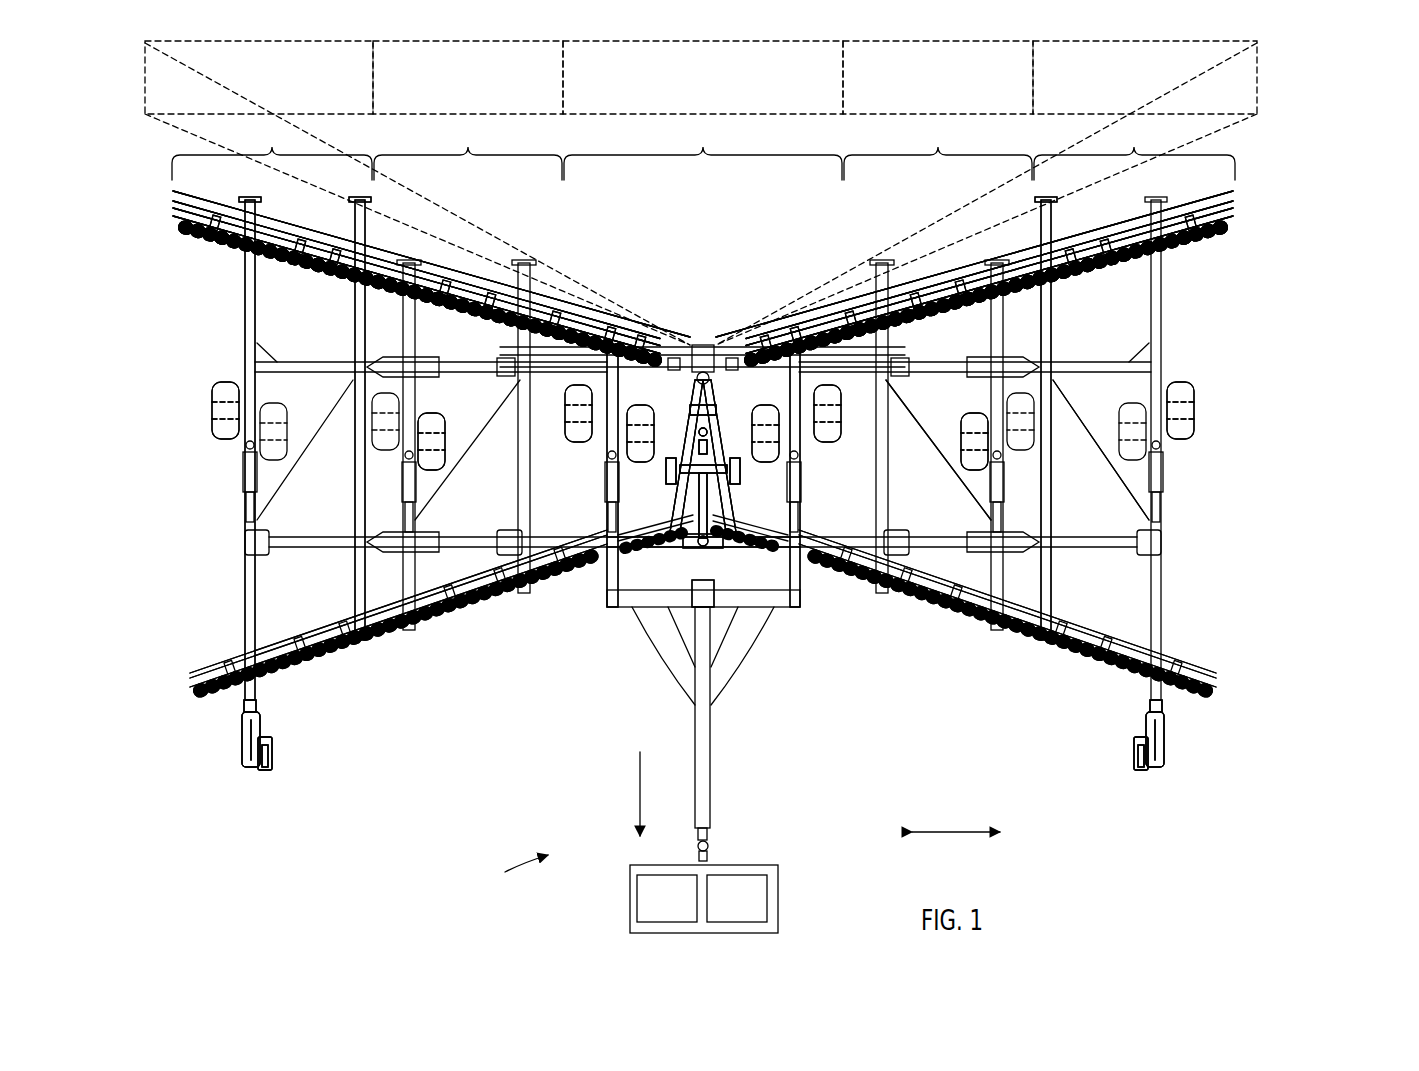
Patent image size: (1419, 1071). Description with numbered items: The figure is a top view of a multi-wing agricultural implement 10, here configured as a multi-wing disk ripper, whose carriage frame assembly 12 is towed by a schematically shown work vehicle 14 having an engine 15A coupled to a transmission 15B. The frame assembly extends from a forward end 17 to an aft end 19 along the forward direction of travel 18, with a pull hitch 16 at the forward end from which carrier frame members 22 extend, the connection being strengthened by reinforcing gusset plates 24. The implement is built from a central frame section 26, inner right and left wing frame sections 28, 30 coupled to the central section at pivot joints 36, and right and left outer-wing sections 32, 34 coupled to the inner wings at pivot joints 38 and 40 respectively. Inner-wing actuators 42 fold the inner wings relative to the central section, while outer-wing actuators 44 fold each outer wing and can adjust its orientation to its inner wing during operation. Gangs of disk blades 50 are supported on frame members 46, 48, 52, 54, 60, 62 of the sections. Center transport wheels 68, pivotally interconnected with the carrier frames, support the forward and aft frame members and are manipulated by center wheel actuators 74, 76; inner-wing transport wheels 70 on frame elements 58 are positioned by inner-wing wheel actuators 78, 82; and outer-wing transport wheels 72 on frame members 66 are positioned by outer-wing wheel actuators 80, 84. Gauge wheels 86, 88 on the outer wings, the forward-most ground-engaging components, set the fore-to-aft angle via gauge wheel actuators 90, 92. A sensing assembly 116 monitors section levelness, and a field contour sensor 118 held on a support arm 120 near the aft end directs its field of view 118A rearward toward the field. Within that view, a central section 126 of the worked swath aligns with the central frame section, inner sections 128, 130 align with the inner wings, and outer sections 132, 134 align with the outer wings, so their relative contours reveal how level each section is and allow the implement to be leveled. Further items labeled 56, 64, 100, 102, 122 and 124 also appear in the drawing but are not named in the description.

The multi-wing agricultural implement 10 is at (1318, 290).
The carriage frame assembly 12 is at (795, 612).
The work vehicle 14 is at (782, 900).
The engine 15A is at (648, 913).
The transmission 15B is at (718, 913).
The pull hitch 16 is at (712, 800).
The forward end 17 is at (511, 865).
The forward direction of travel 18 is at (635, 760).
The aft end 19 is at (580, 135).
The carrier frame members 22 is at (607, 595).
The reinforcing gusset plates 24 is at (672, 675).
The central frame section 26 is at (703, 147).
The inner right wing frame section 28 is at (938, 147).
The inner left wing frame section 30 is at (468, 147).
The right outer-wing section 32 is at (1134, 147).
The left outer-wing section 34 is at (272, 147).
The pivot joints 36 is at (565, 325).
The pivot joints 38 is at (1040, 260).
The pivot joints 40 is at (365, 240).
The inner-wing actuators 42 is at (668, 358).
The outer-wing actuators 44 is at (460, 362).
The forward frame member 46 is at (640, 550).
The aft frame member 48 is at (690, 345).
The gangs of disk blades 50 is at (290, 225).
The frame member 52 is at (478, 612).
The frame member 54 is at (445, 280).
The diagonal brace 56 is at (525, 448).
The frame elements 58 is at (410, 380).
The frame member 60 is at (225, 690).
The frame member 62 is at (208, 198).
The inner leg 64 is at (354, 585).
The frame members 66 is at (244, 590).
The center transport wheels 68 is at (570, 470).
The inner-wing transport wheels 70 is at (440, 480).
The outer-wing transport wheels 72 is at (230, 455).
The center wheel actuator 74 is at (613, 522).
The center wheel actuator 76 is at (795, 520).
The inner-wing wheel actuator 78 is at (950, 495).
The outer-wing wheel actuator 80 is at (1165, 475).
The inner-wing wheel actuator 82 is at (400, 480).
The outer-wing wheel actuator 84 is at (243, 490).
The gauge wheel 86 is at (1168, 757).
The gauge wheel 88 is at (242, 757).
The gauge wheel actuator 90 is at (1162, 658).
The gauge wheel actuator 92 is at (245, 658).
The ground wheel 100 is at (225, 395).
The end wheel position 102 is at (265, 720).
The sensing assembly 116 is at (710, 400).
The field contour sensor 118 is at (700, 345).
The field of view 118A is at (1262, 100).
The support arm 120 is at (485, 300).
The center beam 122 is at (730, 350).
The nozzle position 124 is at (925, 300).
The central section of the swath 126 is at (735, 55).
The inner section of the swath 128 is at (922, 55).
The inner section of the swath 130 is at (478, 55).
The outer section of the swath 132 is at (1112, 55).
The outer section of the swath 134 is at (292, 55).